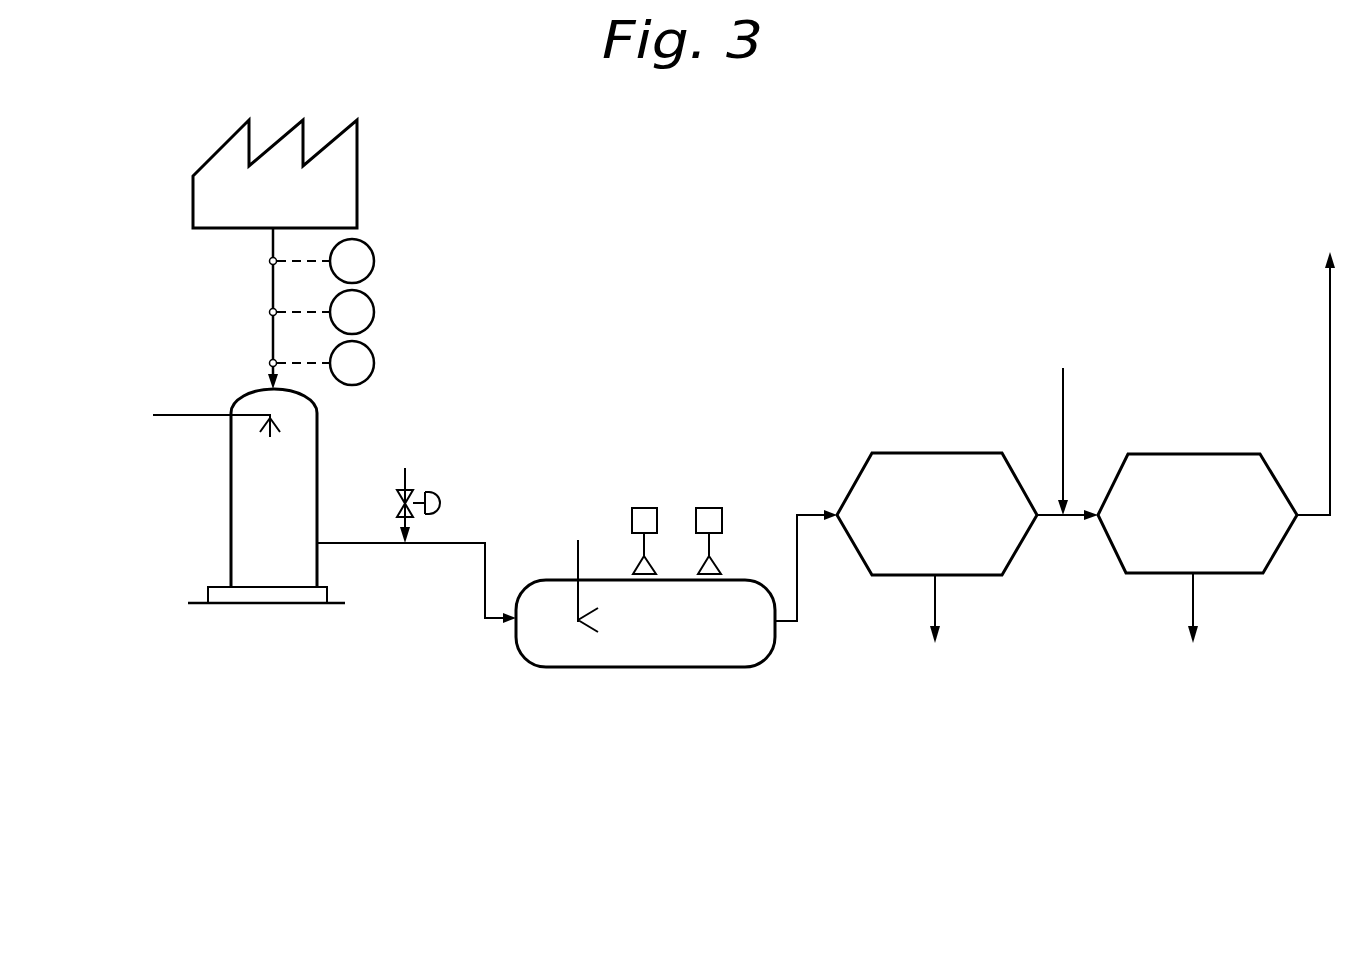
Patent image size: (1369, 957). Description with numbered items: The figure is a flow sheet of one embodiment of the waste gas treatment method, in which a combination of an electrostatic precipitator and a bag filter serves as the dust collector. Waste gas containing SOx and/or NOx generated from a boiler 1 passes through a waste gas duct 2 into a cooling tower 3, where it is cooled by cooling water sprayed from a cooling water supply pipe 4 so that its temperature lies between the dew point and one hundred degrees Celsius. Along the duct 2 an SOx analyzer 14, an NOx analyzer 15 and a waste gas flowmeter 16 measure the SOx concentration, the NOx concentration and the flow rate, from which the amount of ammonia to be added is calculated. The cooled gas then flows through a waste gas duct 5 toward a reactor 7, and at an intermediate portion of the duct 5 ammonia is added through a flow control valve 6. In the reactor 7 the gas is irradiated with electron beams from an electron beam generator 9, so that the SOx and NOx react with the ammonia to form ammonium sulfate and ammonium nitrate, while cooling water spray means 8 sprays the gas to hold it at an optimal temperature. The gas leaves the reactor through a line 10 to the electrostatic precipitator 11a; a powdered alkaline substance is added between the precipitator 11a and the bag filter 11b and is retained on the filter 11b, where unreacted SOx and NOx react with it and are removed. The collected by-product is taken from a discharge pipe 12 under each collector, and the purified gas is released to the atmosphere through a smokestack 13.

The boiler 1 is at (360, 150).
The waste gas duct 2 is at (272, 326).
The cooling tower 3 is at (230, 519).
The cooling water supply pipe 4 is at (185, 418).
The waste gas duct 5 is at (372, 546).
The flow control valve 6 is at (405, 478).
The reactor 7 is at (653, 670).
The cooling water spray means 8 is at (577, 555).
The electron beam generator 9 is at (709, 508).
The pipe from reactor to electrostatic precipitator 10 is at (797, 592).
The electrostatic precipitator 11a is at (1042, 476).
The bag filter 11b is at (1278, 478).
The discharge pipe 12 is at (935, 602).
The smokestack 13 is at (1328, 386).
The SOx analyzer 14 is at (374, 252).
The NOx analyzer 15 is at (374, 303).
The waste gas flowmeter 16 is at (374, 355).